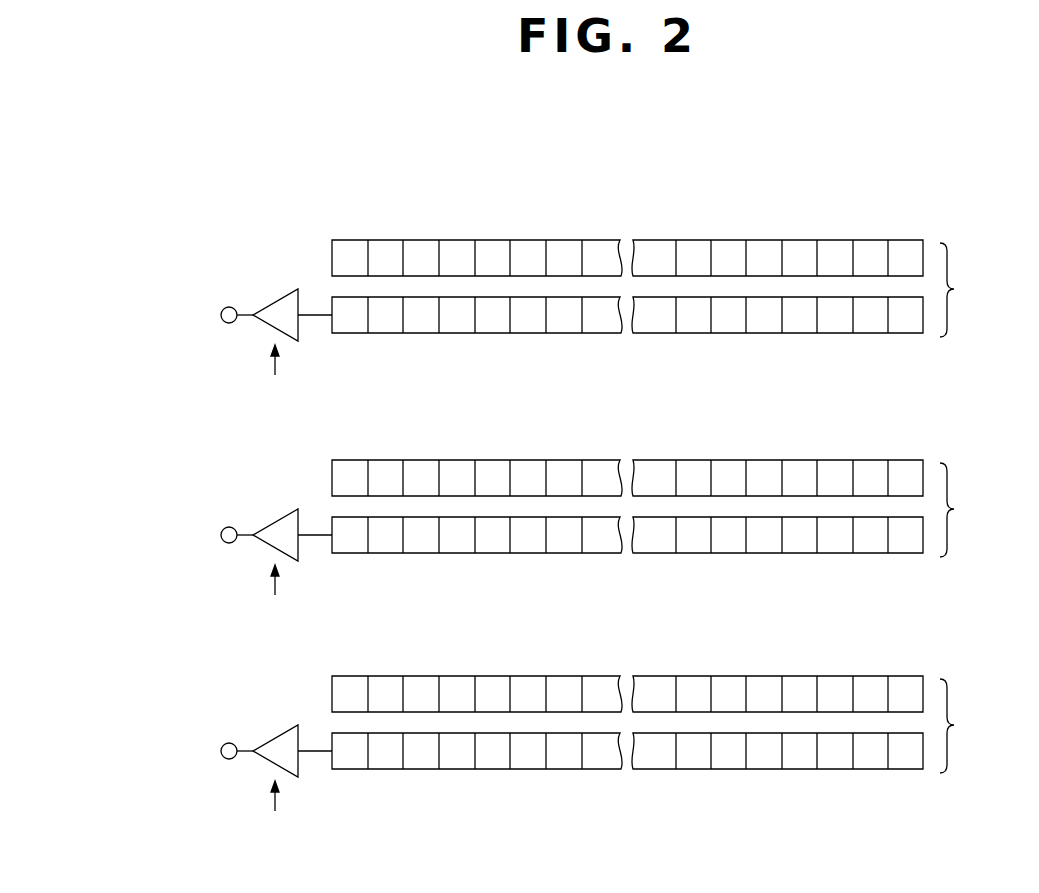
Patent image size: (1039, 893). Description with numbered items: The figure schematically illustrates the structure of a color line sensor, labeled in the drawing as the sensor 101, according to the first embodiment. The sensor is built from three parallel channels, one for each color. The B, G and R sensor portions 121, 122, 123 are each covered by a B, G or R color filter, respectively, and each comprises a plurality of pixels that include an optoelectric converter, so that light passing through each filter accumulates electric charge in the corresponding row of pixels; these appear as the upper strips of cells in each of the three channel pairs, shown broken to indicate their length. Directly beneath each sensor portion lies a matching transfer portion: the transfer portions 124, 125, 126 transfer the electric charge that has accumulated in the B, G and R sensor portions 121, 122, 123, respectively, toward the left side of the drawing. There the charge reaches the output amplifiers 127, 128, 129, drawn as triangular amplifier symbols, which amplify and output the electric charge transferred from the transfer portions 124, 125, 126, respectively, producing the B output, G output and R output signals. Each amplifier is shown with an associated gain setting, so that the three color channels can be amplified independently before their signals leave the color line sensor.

The CCD image sensor 101 is at (850, 164).
The B sensor portion 121 is at (731, 240).
The G sensor portion 122 is at (731, 460).
The R sensor portion 123 is at (731, 676).
The transfer portion 124 is at (730, 333).
The transfer portion 125 is at (730, 553).
The transfer portion 126 is at (730, 769).
The output amplifier 127 is at (276, 299).
The output amplifier 128 is at (276, 519).
The output amplifier 129 is at (276, 735).